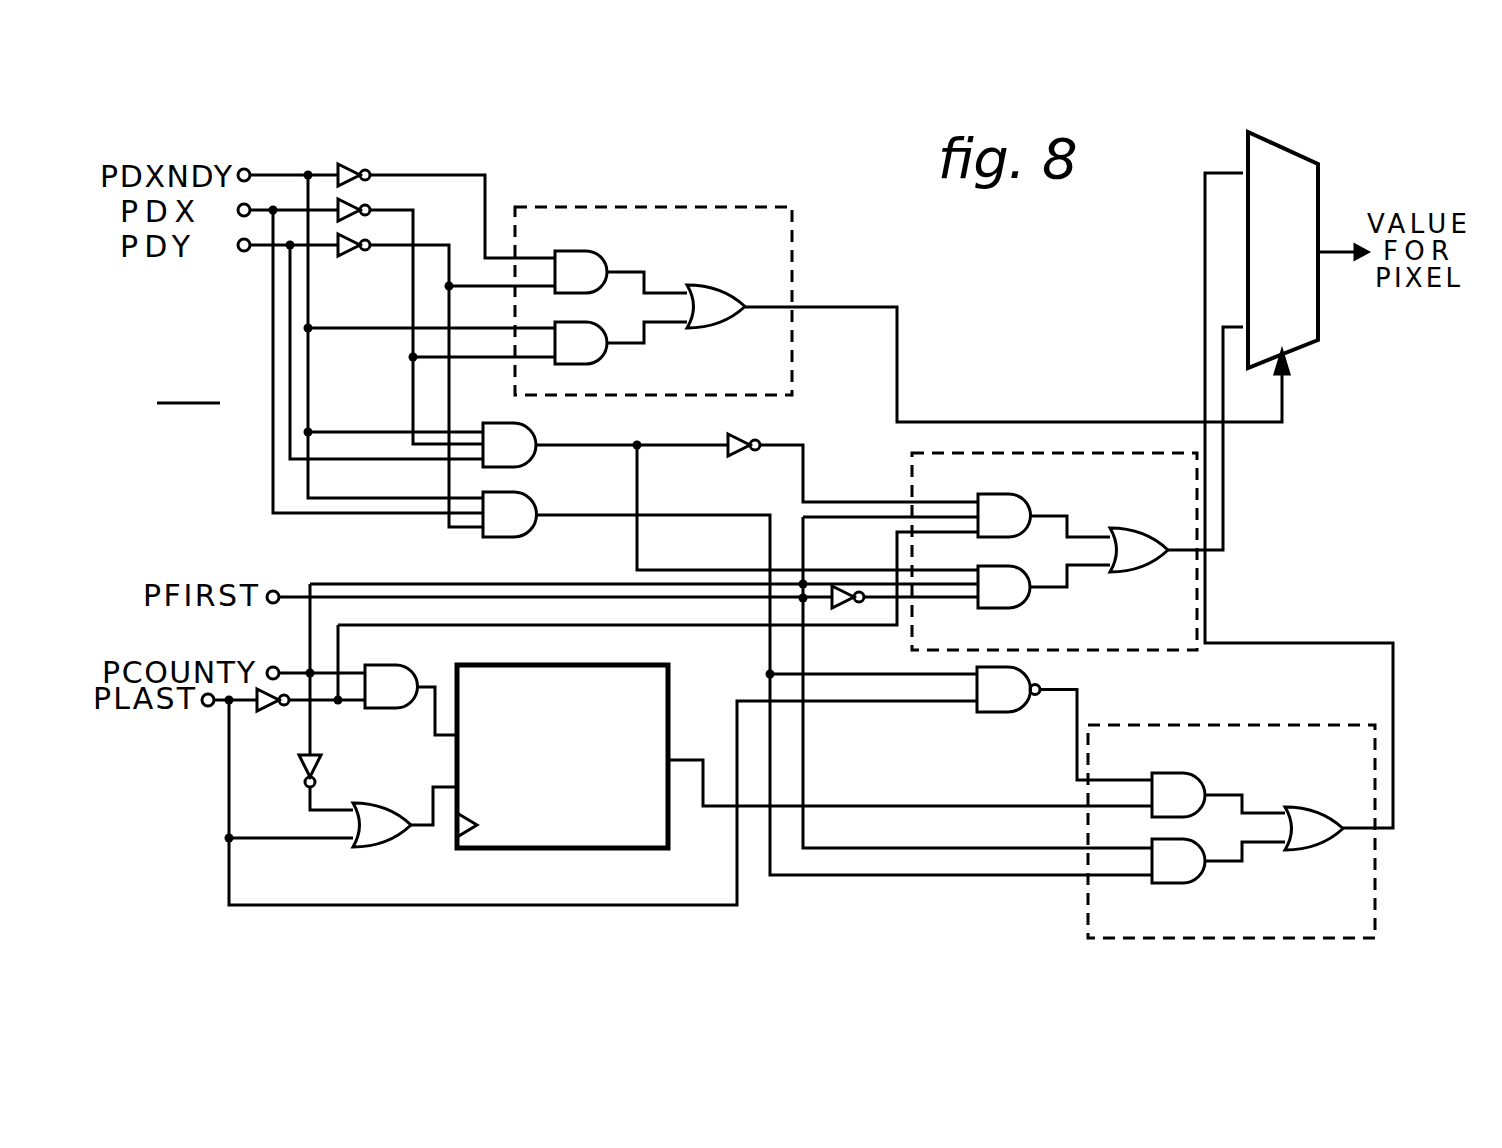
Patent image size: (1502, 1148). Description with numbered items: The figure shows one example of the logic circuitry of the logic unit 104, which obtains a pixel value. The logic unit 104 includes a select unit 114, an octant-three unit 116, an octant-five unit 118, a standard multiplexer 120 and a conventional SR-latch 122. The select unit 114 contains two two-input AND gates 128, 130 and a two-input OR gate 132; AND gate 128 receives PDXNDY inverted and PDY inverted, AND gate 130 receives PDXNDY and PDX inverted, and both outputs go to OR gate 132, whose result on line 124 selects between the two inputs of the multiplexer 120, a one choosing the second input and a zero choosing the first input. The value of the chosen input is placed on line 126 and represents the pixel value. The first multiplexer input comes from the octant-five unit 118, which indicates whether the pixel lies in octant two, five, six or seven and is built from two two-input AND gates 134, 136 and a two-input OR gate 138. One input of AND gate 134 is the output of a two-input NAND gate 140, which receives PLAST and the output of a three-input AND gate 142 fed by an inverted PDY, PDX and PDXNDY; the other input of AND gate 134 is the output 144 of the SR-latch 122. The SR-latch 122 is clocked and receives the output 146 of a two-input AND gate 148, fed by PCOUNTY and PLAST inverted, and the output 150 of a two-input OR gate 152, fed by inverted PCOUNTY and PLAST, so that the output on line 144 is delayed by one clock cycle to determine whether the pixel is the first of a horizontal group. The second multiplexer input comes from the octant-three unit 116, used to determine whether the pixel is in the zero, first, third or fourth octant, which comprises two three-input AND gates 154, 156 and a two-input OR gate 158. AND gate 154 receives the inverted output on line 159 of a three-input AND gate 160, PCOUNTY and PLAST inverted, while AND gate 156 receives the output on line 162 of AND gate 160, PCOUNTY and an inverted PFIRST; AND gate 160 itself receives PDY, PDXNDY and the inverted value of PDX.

The logic unit 104 is at (189, 387).
The select unit 114 is at (694, 267).
The octant 3 unit 116 is at (1112, 515).
The octant 5 unit 118 is at (1181, 833).
The multiplexer 120 is at (1280, 140).
The SR-latch 122 is at (600, 665).
The line 124 is at (900, 378).
The line 126 is at (1322, 258).
The AND gate 128 is at (600, 252).
The AND gate 130 is at (598, 360).
The OR gate 132 is at (738, 287).
The AND gate 134 is at (1203, 778).
The AND gate 136 is at (1182, 885).
The OR gate 138 is at (1318, 850).
The NAND gate 140 is at (1000, 714).
The AND gate 142 is at (536, 532).
The output 144 is at (683, 770).
The output 146 is at (420, 676).
The AND gate 148 is at (385, 710).
The output 150 is at (433, 826).
The OR gate 152 is at (375, 850).
The AND gate 154 is at (1032, 500).
The AND gate 156 is at (1028, 604).
The OR gate 158 is at (1158, 568).
The line 159 is at (803, 490).
The AND gate 160 is at (540, 432).
The line 162 is at (637, 478).